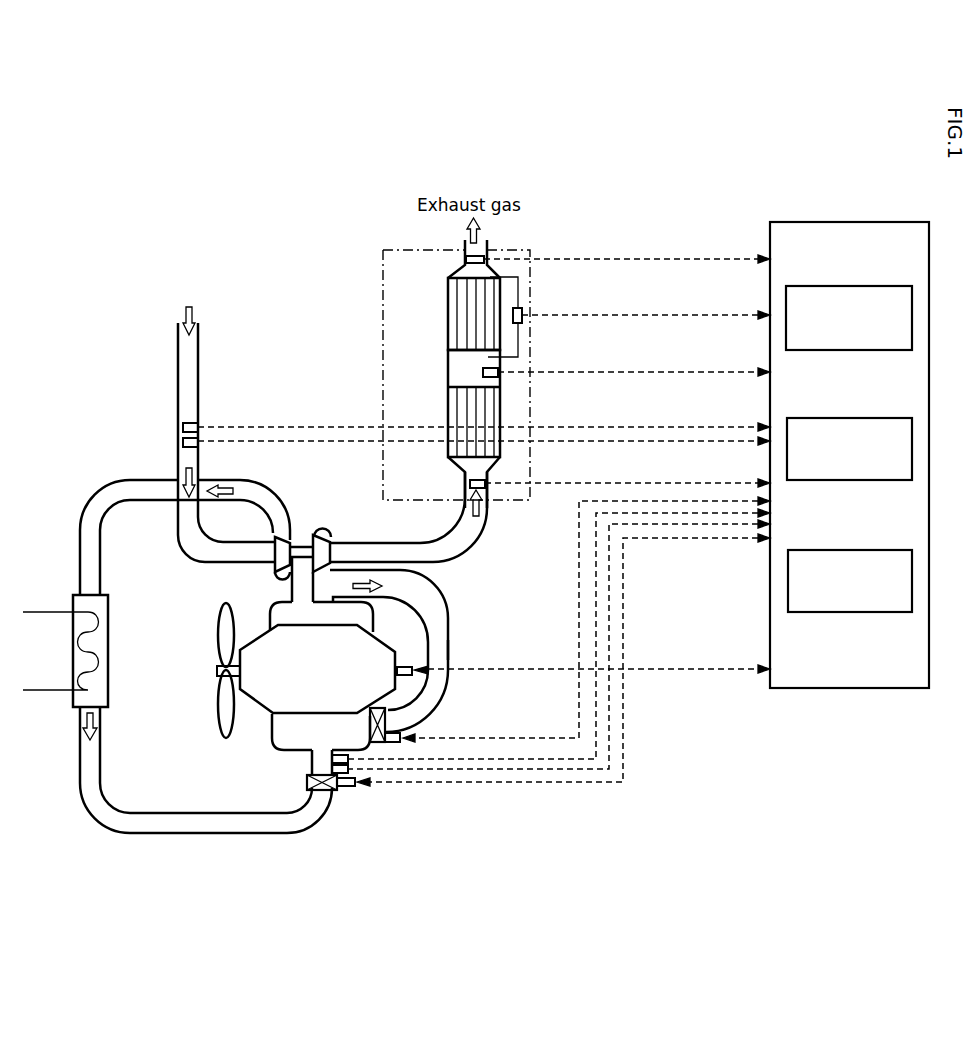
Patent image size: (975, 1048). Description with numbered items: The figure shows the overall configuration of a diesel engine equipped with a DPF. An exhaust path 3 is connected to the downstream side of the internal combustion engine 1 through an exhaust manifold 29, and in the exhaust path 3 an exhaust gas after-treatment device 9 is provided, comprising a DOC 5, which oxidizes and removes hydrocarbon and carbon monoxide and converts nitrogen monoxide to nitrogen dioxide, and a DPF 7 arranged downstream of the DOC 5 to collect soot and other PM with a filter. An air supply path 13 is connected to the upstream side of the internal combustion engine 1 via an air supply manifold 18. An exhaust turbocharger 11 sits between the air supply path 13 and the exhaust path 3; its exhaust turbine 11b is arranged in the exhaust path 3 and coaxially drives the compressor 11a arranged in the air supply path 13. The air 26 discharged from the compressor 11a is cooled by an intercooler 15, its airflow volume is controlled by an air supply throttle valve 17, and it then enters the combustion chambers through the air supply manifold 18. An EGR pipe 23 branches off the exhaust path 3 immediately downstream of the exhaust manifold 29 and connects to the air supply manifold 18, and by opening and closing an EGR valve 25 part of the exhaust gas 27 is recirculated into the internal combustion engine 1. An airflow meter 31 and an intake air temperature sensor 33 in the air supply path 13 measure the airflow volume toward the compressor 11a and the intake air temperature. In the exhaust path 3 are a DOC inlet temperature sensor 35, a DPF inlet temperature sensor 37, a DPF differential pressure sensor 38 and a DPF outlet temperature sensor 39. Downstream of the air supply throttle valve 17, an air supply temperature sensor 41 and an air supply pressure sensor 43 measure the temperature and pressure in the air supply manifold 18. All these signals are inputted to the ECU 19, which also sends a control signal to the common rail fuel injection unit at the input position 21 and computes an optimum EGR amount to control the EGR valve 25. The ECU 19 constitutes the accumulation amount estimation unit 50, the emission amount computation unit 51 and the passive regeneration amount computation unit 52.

The internal combustion engine 1 is at (560, 628).
The exhaust path 3 is at (437, 561).
The DOC (Diesel Oxidation Catalyst) 5 is at (475, 400).
The DPF 7 is at (475, 322).
The exhaust gas after-treatment device 9 is at (383, 262).
The exhaust turbocharger 11 is at (298, 535).
The compressor 11a is at (273, 574).
The exhaust turbine 11b is at (332, 537).
The air supply path 13 is at (60, 805).
The intercooler 15 is at (73, 600).
The air supply throttle valve 17 is at (322, 792).
The air supply manifold 18 is at (280, 728).
The ECU 19 is at (840, 222).
The input position of the control signal 21 is at (404, 665).
The EGR pipe 23 is at (449, 696).
The EGR valve 25 is at (387, 718).
The air 26 is at (183, 470).
The exhaust gas 27 is at (313, 586).
The exhaust manifold 29 is at (373, 619).
The airflow meter 31 is at (198, 424).
The intake air temperature sensor 33 is at (198, 445).
The DOC inlet temperature sensor 35 is at (490, 465).
The DPF inlet temperature sensor 37 is at (498, 373).
The DPF differential pressure sensor 38 is at (523, 314).
The DPF outlet temperature sensor 39 is at (485, 261).
The air supply temperature sensor 41 is at (332, 769).
The air supply pressure sensor 43 is at (332, 758).
The accumulation amount estimation unit 50 is at (882, 286).
The emission amount computation unit 51 is at (882, 418).
The passive regeneration amount computation unit 52 is at (884, 550).